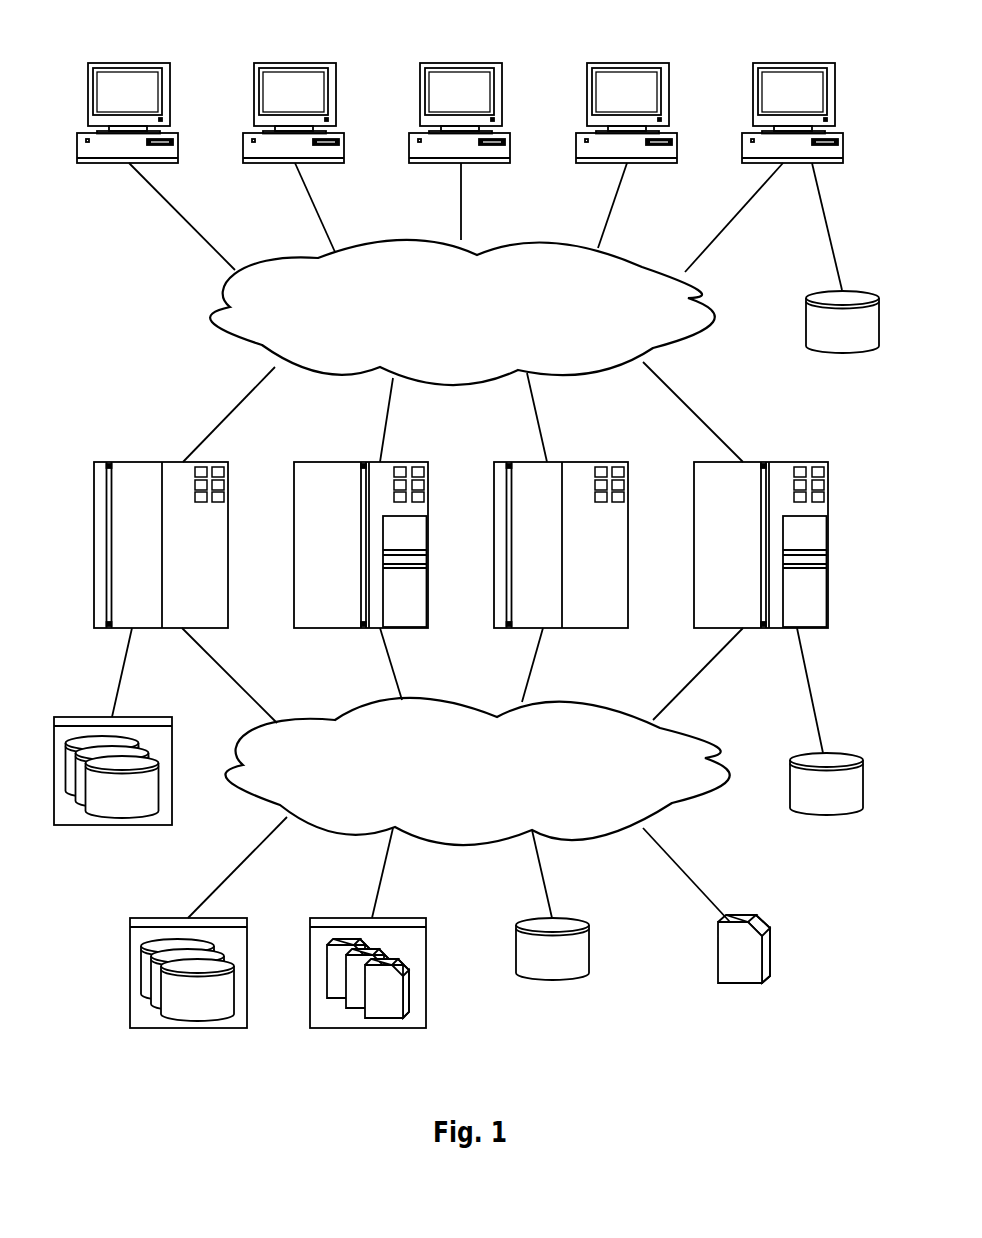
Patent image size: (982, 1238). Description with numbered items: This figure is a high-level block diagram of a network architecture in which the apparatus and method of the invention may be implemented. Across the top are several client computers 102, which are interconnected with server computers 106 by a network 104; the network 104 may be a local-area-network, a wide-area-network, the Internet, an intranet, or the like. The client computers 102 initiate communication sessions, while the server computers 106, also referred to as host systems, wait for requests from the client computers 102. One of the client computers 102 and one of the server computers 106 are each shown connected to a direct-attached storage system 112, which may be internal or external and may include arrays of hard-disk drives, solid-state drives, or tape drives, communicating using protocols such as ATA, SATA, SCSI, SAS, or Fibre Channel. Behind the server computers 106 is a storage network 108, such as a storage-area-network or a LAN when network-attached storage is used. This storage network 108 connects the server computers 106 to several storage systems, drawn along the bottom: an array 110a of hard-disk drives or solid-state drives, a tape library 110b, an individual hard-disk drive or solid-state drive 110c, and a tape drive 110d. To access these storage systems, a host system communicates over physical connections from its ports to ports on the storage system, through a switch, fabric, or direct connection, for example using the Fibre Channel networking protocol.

The client computer 102 is at (109, 100).
The network 104 is at (442, 336).
The server computer 106 is at (119, 554).
The storage network 108 is at (459, 794).
The array of hard-disk drives or solid-state drives 110a is at (187, 1028).
The tape library 110b is at (368, 1028).
The individual hard-disk drive or solid-state drive 110c is at (553, 975).
The tape drive 110d is at (738, 983).
The direct-attached storage system 112 is at (847, 348).